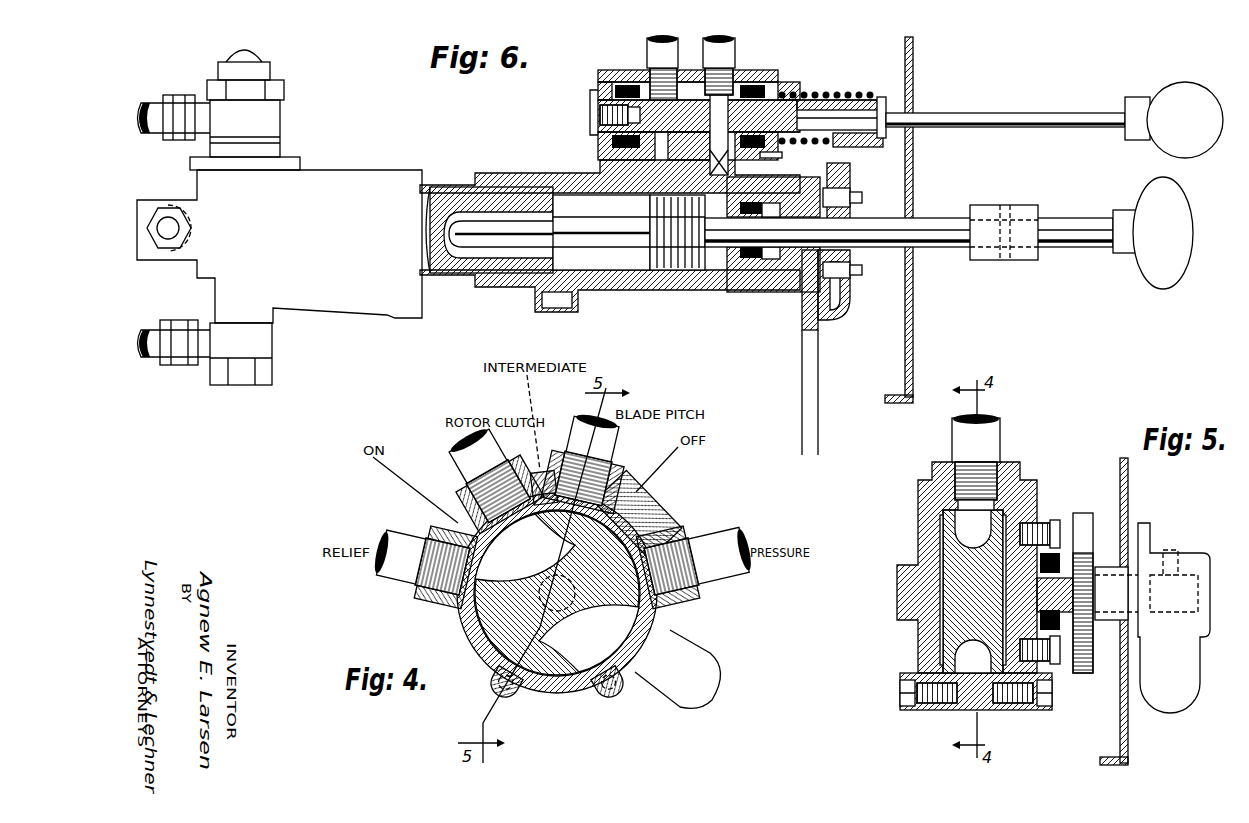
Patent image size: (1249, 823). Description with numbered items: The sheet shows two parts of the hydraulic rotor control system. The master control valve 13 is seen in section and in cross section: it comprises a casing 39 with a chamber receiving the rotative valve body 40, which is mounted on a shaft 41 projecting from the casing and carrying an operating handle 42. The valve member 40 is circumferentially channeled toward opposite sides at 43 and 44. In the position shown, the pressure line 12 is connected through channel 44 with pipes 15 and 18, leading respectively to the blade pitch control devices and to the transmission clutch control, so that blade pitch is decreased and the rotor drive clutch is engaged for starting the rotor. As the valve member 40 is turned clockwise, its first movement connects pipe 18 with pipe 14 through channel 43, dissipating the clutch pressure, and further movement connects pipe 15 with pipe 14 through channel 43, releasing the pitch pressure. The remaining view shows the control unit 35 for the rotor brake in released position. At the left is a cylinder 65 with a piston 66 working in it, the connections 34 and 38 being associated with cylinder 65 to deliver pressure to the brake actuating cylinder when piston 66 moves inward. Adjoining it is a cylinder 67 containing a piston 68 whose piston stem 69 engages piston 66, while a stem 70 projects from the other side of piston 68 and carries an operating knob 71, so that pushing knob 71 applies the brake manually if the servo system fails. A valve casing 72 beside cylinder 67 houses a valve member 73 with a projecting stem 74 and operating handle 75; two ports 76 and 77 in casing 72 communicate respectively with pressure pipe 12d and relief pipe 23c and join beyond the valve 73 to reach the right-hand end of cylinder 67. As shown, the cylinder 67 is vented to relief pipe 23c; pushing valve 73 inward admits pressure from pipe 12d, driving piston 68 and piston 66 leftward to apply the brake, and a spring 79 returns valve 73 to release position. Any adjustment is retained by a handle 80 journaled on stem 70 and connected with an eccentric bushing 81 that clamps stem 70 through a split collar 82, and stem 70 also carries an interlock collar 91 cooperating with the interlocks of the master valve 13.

In FIG. 6, the connection 34 is at (150, 104).
In FIG. 6, the connection 38 is at (152, 360).
In FIG. 6, the cylinder 65 is at (312, 182).
In FIG. 6, the piston 66 is at (440, 186).
In FIG. 6, the cylinder 67 is at (616, 278).
In FIG. 6, the piston stem 69 is at (604, 222).
In FIG. 6, the control unit for the rotor brake 35 is at (668, 278).
In FIG. 6, the piston 68 is at (695, 268).
In FIG. 6, the valve casing 72 is at (600, 153).
In FIG. 6, the valve member 73 is at (598, 110).
In FIG. 6, the port 76 is at (660, 158).
In FIG. 6, the port 77 is at (782, 155).
In FIG. 6, the pipe 18 is at (722, 115).
In FIG. 4, the pipe 18 is at (455, 453).
In FIG. 6, the pressure pipe 12d is at (655, 42).
In FIG. 6, the relief pipe 23c is at (725, 42).
In FIG. 6, the spring 79 is at (813, 92).
In FIG. 6, the stem 74 is at (983, 116).
In FIG. 6, the operating handle 75 is at (1173, 84).
In FIG. 6, the stem 70 is at (881, 237).
In FIG. 6, the operating knob 71 is at (1167, 280).
In FIG. 6, the interlock collar 91 is at (1025, 208).
In FIG. 6, the split collar 82 is at (852, 203).
In FIG. 6, the eccentric bushing 81 is at (846, 296).
In FIG. 6, the handle 80 is at (812, 353).
In FIG. 4, the master control valve 13 is at (558, 697).
In FIG. 5, the master control valve 13 is at (912, 642).
In FIG. 4, the pipe 14 is at (408, 537).
In FIG. 4, the pipe 15 is at (614, 442).
In FIG. 5, the pipe 15 is at (995, 439).
In FIG. 4, the pressure line 12 is at (737, 529).
In FIG. 4, the casing 39 is at (640, 518).
In FIG. 4, the rotative valve body 40 is at (617, 597).
In FIG. 5, the rotative valve body 40 is at (960, 556).
In FIG. 5, the shaft 41 is at (1035, 522).
In FIG. 4, the operating handle 42 is at (678, 703).
In FIG. 5, the operating handle 42 is at (1188, 681).
In FIG. 4, the channel 43 is at (567, 638).
In FIG. 5, the channel 43 is at (973, 657).
In FIG. 4, the channel 44 is at (537, 547).
In FIG. 5, the channel 44 is at (973, 529).